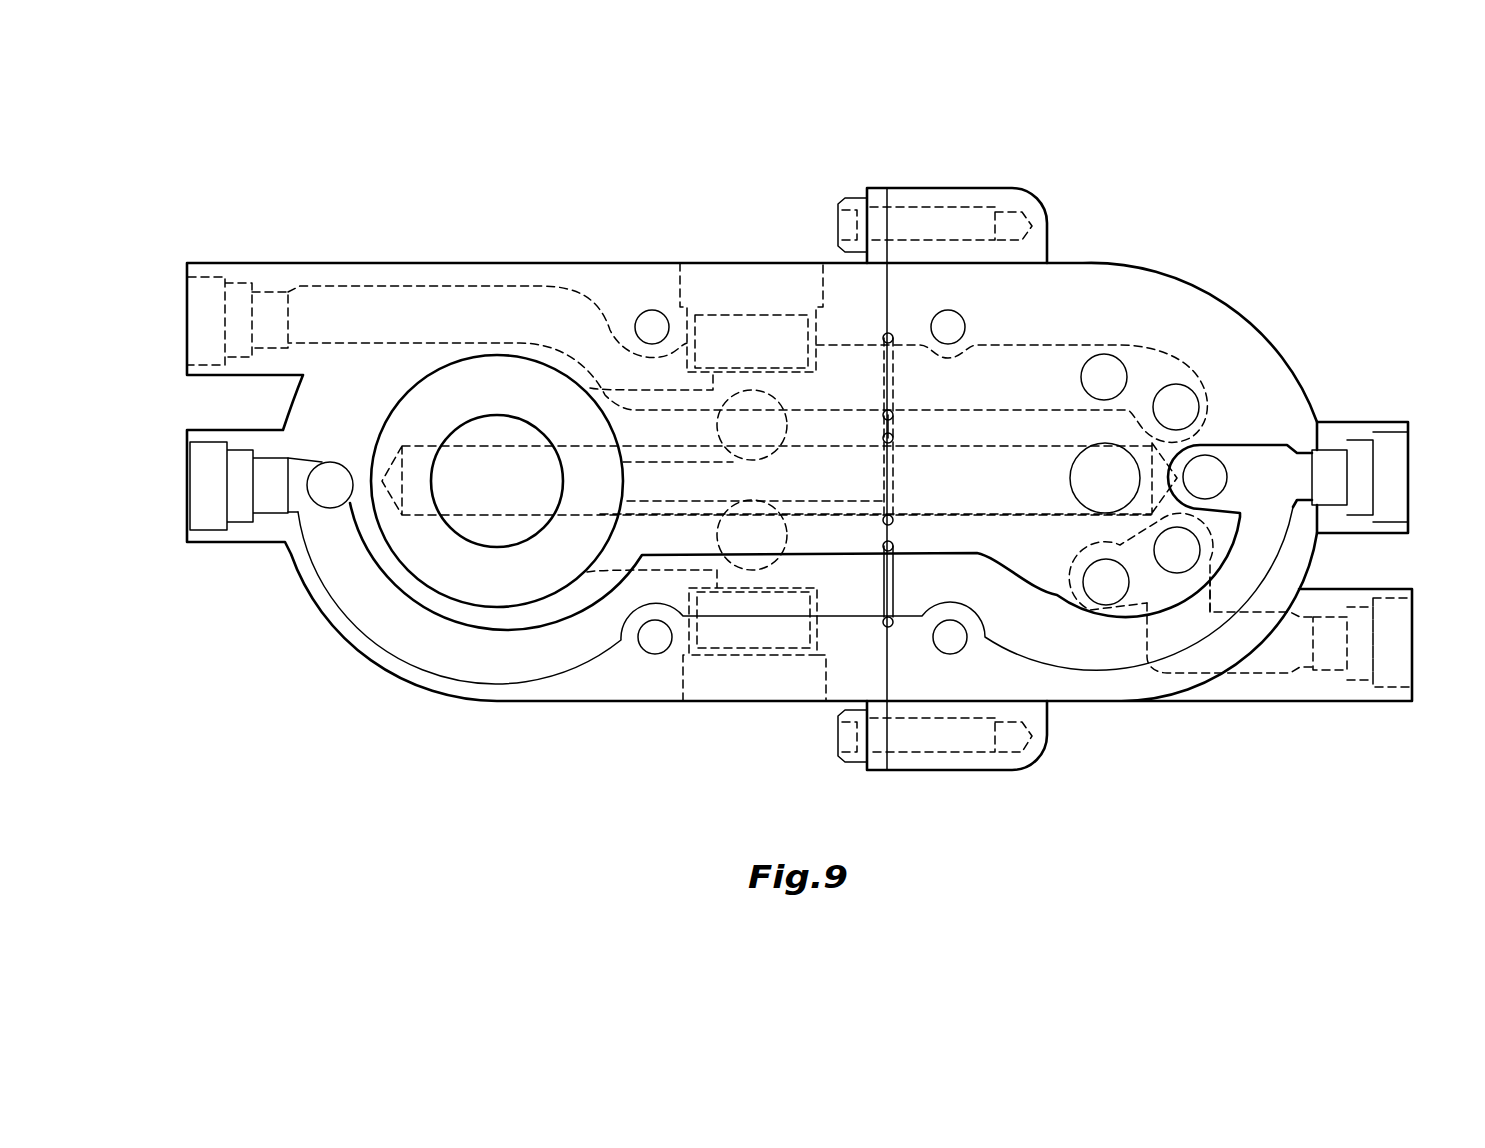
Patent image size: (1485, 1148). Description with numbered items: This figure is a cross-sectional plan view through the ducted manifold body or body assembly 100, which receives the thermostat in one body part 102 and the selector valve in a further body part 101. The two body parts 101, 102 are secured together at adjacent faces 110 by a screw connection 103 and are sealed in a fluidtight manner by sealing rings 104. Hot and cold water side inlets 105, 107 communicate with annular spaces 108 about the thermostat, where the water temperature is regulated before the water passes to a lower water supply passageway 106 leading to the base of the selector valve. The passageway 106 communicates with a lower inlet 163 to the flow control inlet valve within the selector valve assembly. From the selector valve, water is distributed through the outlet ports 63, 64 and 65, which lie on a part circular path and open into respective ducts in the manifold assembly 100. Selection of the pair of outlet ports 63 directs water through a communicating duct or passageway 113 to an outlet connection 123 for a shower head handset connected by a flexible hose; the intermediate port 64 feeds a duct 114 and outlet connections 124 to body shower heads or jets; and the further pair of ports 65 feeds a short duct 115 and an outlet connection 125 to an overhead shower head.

The ducted manifold body 100 is at (678, 236).
The further body part 101 is at (1143, 278).
The body part 102 is at (598, 284).
The screw connection 103 is at (945, 202).
The sealing rings 104 is at (885, 378).
The hot water side inlet 105 is at (760, 300).
The lower water supply passageway 106 is at (978, 445).
The cold water side inlet 107 is at (752, 660).
The annular spaces 108 is at (420, 410).
The adjacent faces 110 is at (893, 655).
The communicating duct 113 is at (432, 284).
The duct 114 is at (505, 655).
The short duct 115 is at (1257, 676).
The outlet connection 123 is at (205, 318).
The outlet connections 124 is at (205, 485).
The outlet connection 125 is at (1392, 637).
The outlet ports 63 is at (1176, 405).
The intermediate port 64 is at (1208, 470).
The outlet ports 65 is at (1185, 548).
The lower inlet 163 is at (1090, 492).